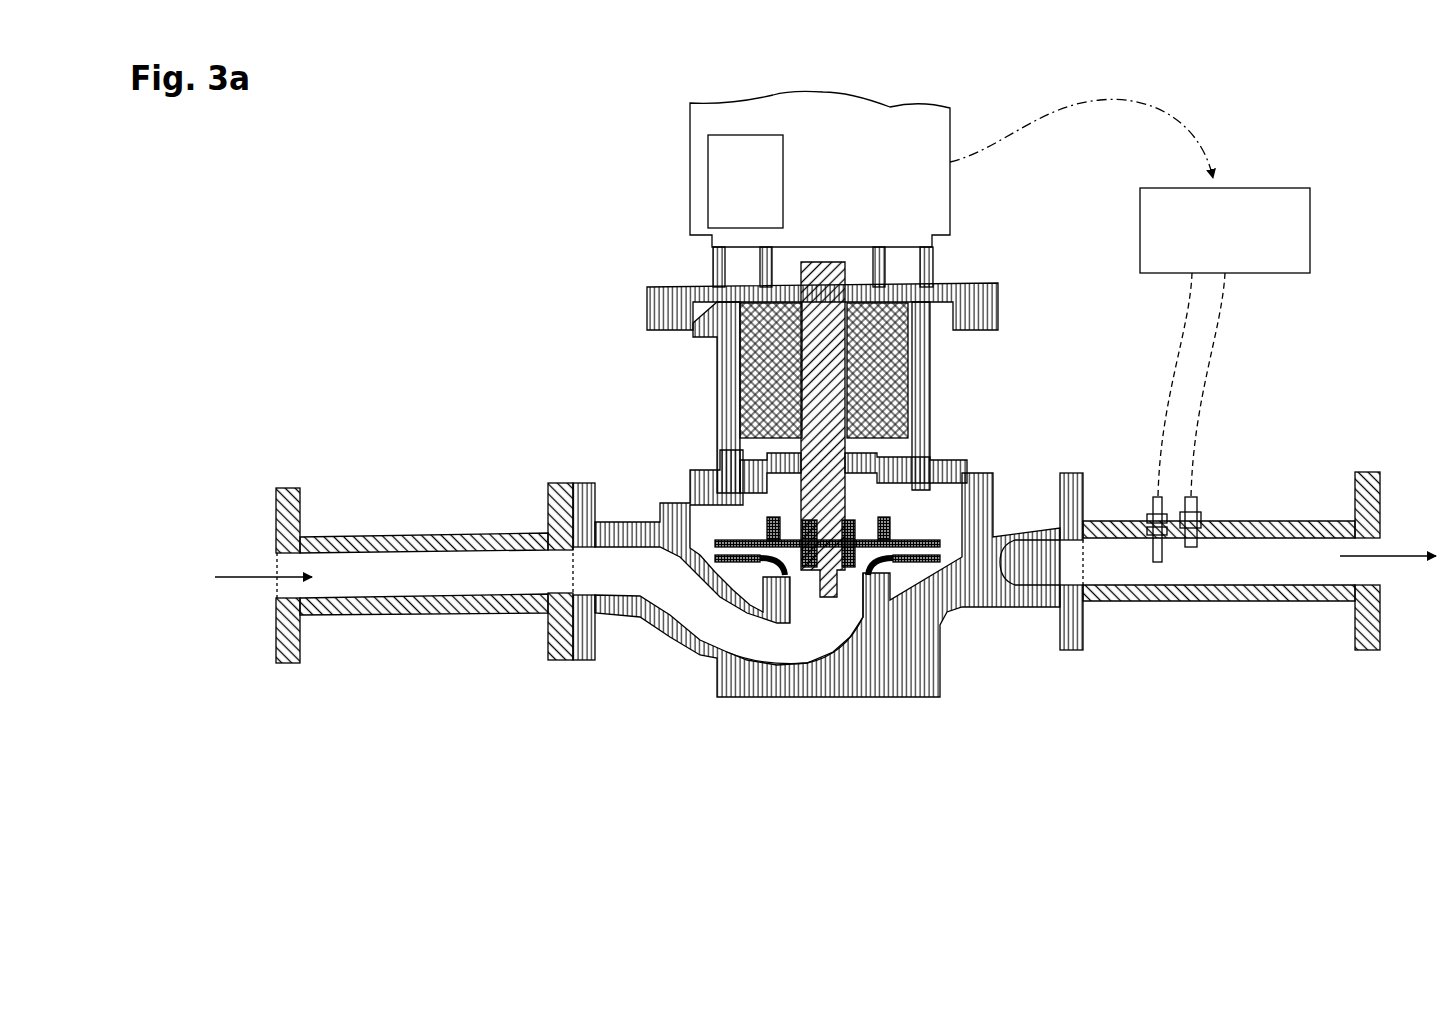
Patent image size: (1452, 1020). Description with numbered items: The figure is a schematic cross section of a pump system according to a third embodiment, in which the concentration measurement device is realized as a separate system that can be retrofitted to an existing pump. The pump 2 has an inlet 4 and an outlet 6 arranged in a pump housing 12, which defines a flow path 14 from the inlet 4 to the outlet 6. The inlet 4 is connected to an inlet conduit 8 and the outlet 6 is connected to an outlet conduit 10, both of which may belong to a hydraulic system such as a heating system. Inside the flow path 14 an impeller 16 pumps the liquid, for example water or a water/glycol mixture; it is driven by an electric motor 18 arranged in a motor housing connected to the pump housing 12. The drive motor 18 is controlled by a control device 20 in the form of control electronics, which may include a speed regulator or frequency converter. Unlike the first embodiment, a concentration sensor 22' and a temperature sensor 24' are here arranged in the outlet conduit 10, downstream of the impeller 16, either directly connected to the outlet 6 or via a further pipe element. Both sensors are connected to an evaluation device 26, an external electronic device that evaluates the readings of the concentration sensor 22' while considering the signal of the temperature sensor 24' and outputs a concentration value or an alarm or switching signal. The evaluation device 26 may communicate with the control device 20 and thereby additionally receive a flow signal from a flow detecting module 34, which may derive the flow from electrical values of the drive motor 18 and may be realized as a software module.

The pump 2 is at (1042, 356).
The inlet 4 is at (625, 580).
The outlet 6 is at (1062, 572).
The inlet conduit 8 is at (462, 560).
The outlet conduit 10 is at (1277, 550).
The pump housing 12 is at (937, 685).
The flow path 14 is at (818, 650).
The impeller 16 is at (915, 540).
The electric motor 18 is at (942, 386).
The control device 20 is at (902, 124).
The concentration sensor 22' is at (1122, 492).
The temperature sensor 24' is at (1227, 497).
The evaluation device 26 is at (1230, 250).
The flow detecting module 34 is at (759, 190).